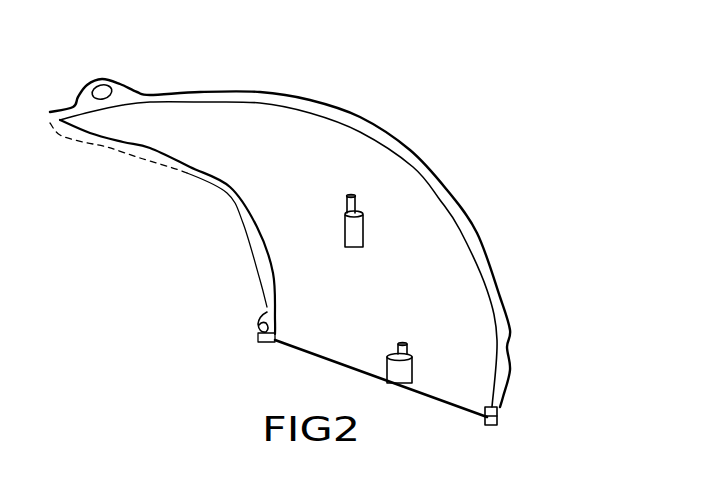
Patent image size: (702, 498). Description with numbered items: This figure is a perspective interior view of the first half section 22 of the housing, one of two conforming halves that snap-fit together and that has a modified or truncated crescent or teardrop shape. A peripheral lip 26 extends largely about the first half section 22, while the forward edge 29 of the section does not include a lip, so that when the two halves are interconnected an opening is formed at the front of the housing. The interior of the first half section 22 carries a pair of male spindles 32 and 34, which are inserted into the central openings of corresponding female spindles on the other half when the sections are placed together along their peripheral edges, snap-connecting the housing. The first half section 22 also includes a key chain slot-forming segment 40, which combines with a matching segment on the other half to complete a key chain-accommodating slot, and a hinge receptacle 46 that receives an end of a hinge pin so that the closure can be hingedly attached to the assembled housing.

The first half section 22 is at (500, 303).
The peripheral lip 26 is at (477, 235).
The forward edge 29 is at (433, 400).
The male spindle 32 is at (388, 362).
The male spindle 34 is at (362, 225).
The key chain slot-forming segment 40 is at (116, 80).
The hinge receptacle 46 is at (253, 327).